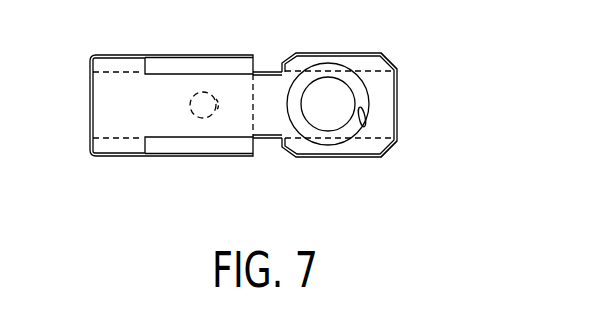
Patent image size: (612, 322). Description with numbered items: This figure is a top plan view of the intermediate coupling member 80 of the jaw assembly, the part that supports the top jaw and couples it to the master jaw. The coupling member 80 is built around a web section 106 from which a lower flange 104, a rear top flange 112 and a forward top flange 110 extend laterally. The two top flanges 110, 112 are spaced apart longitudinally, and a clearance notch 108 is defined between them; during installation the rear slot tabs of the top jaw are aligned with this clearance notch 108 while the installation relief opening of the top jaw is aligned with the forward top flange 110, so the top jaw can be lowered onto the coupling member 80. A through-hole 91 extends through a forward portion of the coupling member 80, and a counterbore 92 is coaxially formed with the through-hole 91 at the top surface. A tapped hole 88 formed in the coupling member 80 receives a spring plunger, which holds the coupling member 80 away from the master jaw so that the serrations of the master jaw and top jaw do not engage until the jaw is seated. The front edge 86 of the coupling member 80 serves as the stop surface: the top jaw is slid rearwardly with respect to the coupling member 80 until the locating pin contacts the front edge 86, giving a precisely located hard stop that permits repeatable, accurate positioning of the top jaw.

The intermediate coupling member 80 is at (412, 45).
The front edge 86 is at (397, 105).
The tapped hole 88 is at (220, 118).
The through-hole 91 is at (335, 118).
The counterbore 92 is at (362, 127).
The lower flange 104 is at (184, 63).
The web section 106 is at (187, 140).
The clearance notch 108 is at (266, 64).
The forward top flange 110 is at (370, 63).
The rear top flange 112 is at (117, 63).